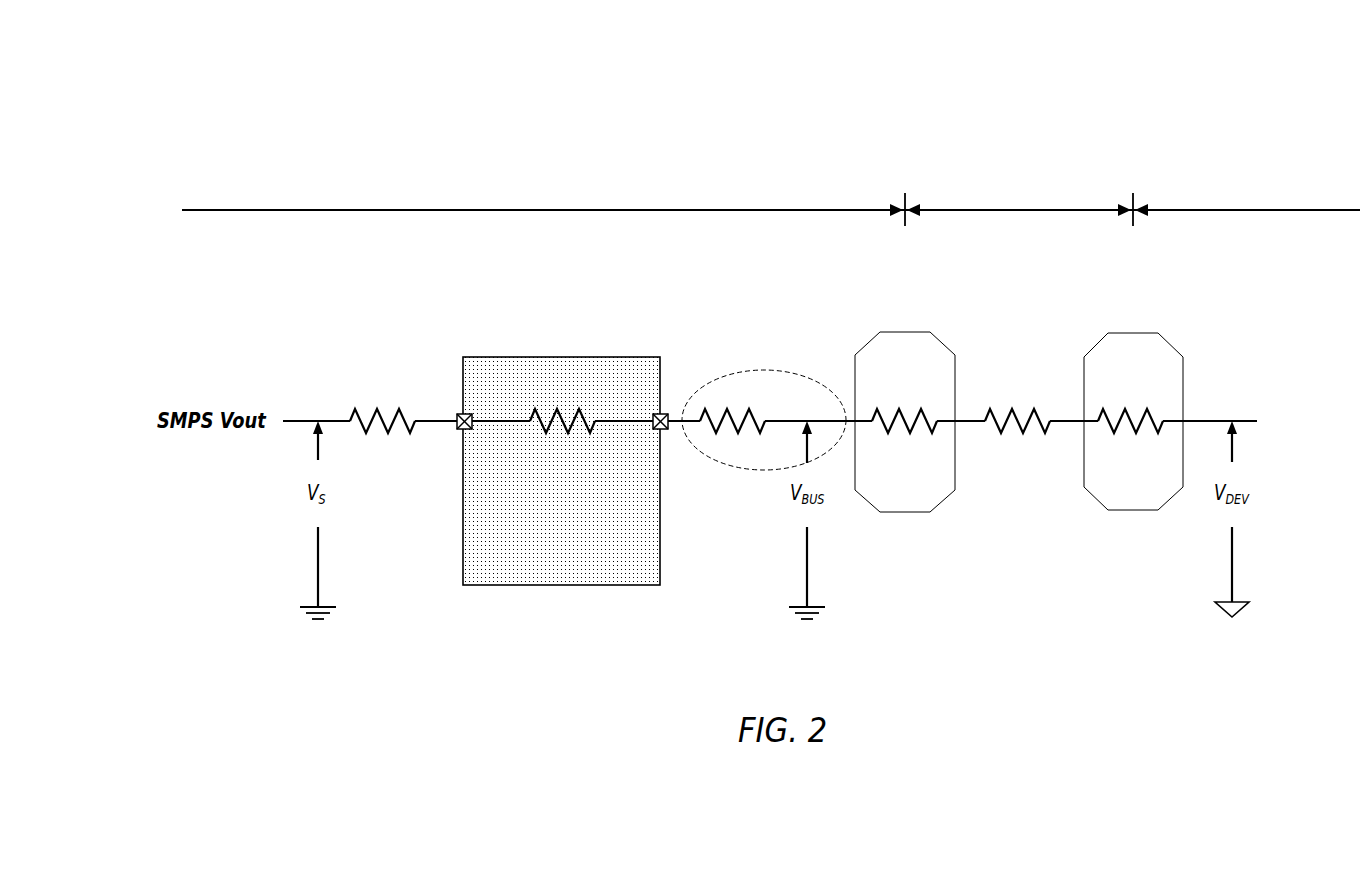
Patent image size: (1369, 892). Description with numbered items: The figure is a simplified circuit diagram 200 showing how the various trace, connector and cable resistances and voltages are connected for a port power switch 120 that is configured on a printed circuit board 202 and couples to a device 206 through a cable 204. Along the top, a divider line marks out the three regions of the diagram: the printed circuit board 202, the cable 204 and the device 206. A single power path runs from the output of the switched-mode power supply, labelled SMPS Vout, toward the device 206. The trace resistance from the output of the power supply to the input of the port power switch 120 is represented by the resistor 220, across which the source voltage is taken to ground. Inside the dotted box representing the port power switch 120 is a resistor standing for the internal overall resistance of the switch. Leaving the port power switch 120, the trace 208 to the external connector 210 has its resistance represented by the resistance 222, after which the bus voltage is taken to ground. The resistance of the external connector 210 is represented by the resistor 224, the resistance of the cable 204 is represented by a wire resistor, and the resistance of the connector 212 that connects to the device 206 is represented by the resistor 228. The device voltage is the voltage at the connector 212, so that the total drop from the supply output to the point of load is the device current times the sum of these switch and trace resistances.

The simplified circuit diagram 200 is at (190, 172).
The printed circuit board 202 is at (543, 181).
The cable 204 is at (1019, 189).
The device 206 is at (1246, 181).
The trace 208 is at (805, 368).
The external connector 210 is at (897, 332).
The connector 212 is at (1175, 348).
The port power switch 120 is at (650, 577).
The resistor 220 is at (383, 425).
The resistance 222 is at (742, 435).
The resistor 224 is at (903, 425).
The resistor 228 is at (1113, 430).